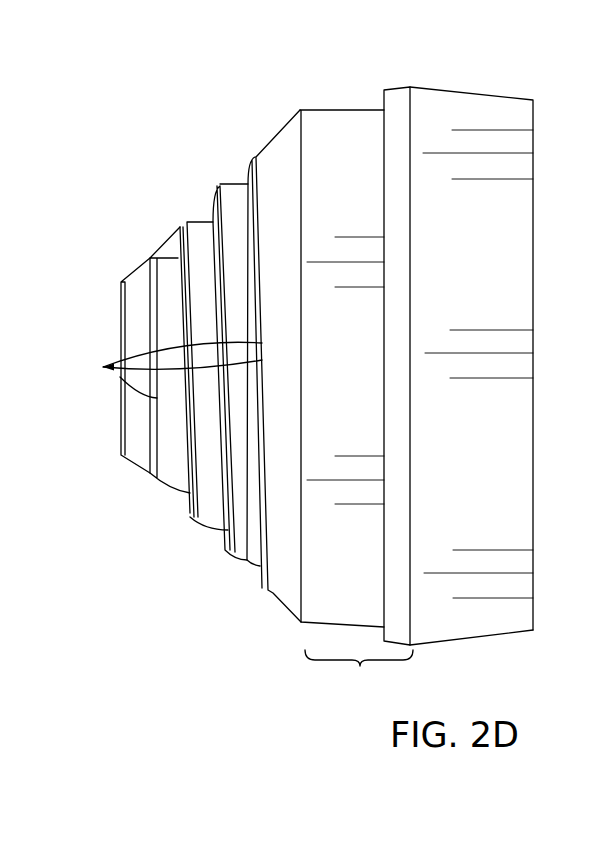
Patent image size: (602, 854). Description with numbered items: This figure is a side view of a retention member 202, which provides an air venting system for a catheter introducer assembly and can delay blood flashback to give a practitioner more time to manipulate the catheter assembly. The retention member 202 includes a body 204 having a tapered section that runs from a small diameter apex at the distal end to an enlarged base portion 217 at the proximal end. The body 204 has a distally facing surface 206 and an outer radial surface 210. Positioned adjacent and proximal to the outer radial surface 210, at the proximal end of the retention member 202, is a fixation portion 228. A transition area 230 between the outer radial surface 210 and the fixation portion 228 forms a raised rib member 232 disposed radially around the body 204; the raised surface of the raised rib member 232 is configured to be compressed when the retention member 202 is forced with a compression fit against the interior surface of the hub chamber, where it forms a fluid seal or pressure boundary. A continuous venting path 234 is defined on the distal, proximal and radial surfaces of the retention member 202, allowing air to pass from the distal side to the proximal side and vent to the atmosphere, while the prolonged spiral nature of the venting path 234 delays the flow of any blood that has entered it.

The retention member 202 is at (170, 553).
The body 204 is at (188, 222).
The distally facing surface 206 is at (100, 290).
The outer radial surface 210 is at (343, 127).
The enlarged base portion 217 is at (498, 618).
The fixation portion 228 is at (515, 213).
The transition area 230 is at (359, 673).
The raised rib member 232 is at (410, 93).
The venting path 234 is at (160, 370).